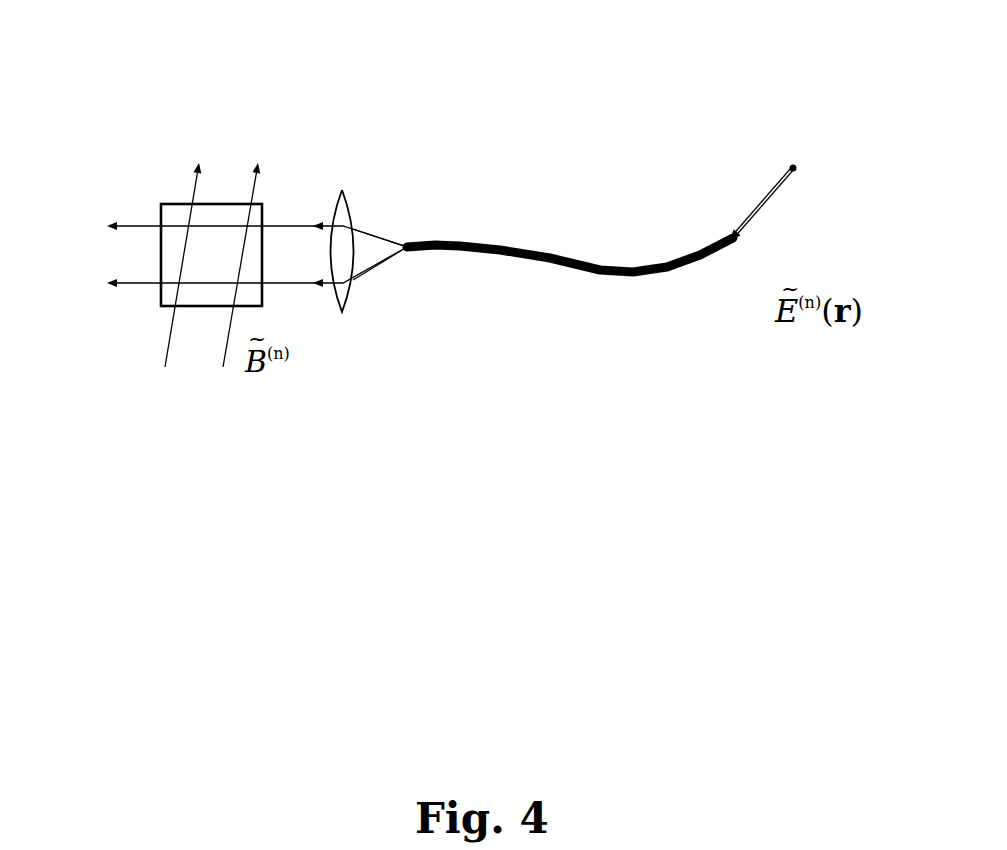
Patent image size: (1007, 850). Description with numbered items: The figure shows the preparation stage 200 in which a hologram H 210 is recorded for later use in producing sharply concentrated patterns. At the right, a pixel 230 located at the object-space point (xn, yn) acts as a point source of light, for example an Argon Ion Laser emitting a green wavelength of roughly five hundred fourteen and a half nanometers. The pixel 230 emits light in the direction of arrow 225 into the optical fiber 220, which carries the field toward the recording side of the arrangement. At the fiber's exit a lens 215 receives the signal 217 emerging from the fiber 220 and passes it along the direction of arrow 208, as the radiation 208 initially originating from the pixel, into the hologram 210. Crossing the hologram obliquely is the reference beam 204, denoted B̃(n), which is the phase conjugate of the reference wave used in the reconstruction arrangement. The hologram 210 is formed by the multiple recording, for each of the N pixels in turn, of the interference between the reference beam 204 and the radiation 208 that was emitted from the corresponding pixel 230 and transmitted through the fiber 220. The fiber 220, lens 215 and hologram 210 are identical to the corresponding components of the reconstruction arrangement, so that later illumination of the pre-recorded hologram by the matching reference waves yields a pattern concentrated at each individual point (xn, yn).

The preparation stage 200 is at (305, 67).
The reference beam 204 is at (193, 347).
The radiation 208 is at (293, 257).
The hologram H 210 is at (193, 262).
The lens 215 is at (340, 192).
The signal 217 is at (379, 248).
The optical fiber 220 is at (462, 243).
The direction of emission 225 is at (751, 206).
The pixel 230 is at (793, 168).